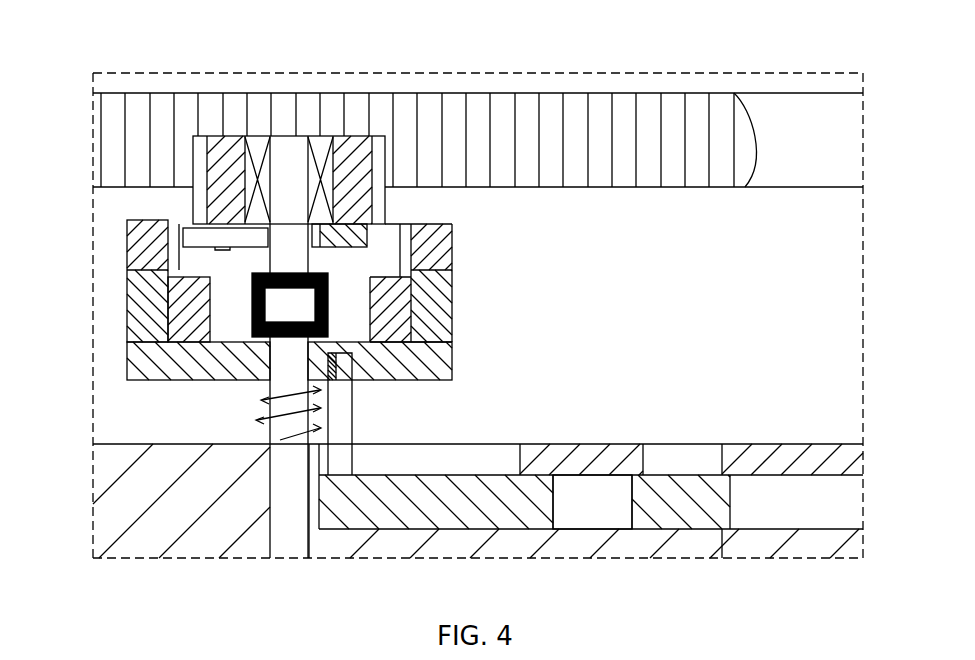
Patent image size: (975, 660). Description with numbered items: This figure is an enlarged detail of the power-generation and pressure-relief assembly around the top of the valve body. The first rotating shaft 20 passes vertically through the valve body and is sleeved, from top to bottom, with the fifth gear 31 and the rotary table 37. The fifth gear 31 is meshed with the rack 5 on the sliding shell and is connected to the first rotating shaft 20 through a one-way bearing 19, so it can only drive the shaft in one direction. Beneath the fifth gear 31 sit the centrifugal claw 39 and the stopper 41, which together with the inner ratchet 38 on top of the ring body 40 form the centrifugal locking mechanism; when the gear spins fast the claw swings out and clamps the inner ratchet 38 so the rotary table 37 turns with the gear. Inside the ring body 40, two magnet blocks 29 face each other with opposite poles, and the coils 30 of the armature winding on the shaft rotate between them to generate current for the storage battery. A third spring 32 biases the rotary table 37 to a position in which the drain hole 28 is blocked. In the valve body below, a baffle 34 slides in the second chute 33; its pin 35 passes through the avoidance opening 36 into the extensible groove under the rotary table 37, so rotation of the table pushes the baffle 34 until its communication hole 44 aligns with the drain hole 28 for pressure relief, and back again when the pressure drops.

The rack 5 is at (212, 107).
The one-way bearing 19 is at (246, 170).
The first rotating shaft 20 is at (285, 508).
The drain hole 28 is at (665, 458).
The magnet block 29 is at (192, 300).
The coils 30 is at (253, 328).
The fifth gear 31 is at (355, 170).
The third spring 32 is at (318, 388).
The second chute 33 is at (795, 505).
The baffle 34 is at (510, 507).
The pin 35 is at (345, 428).
The avoidance opening 36 is at (430, 455).
The rotary table 37 is at (140, 381).
The inner ratchet 38 is at (150, 256).
The centrifugal claw 39 is at (217, 233).
The ring body 40 is at (438, 325).
The stopper 41 is at (357, 227).
The communication hole 44 is at (588, 508).